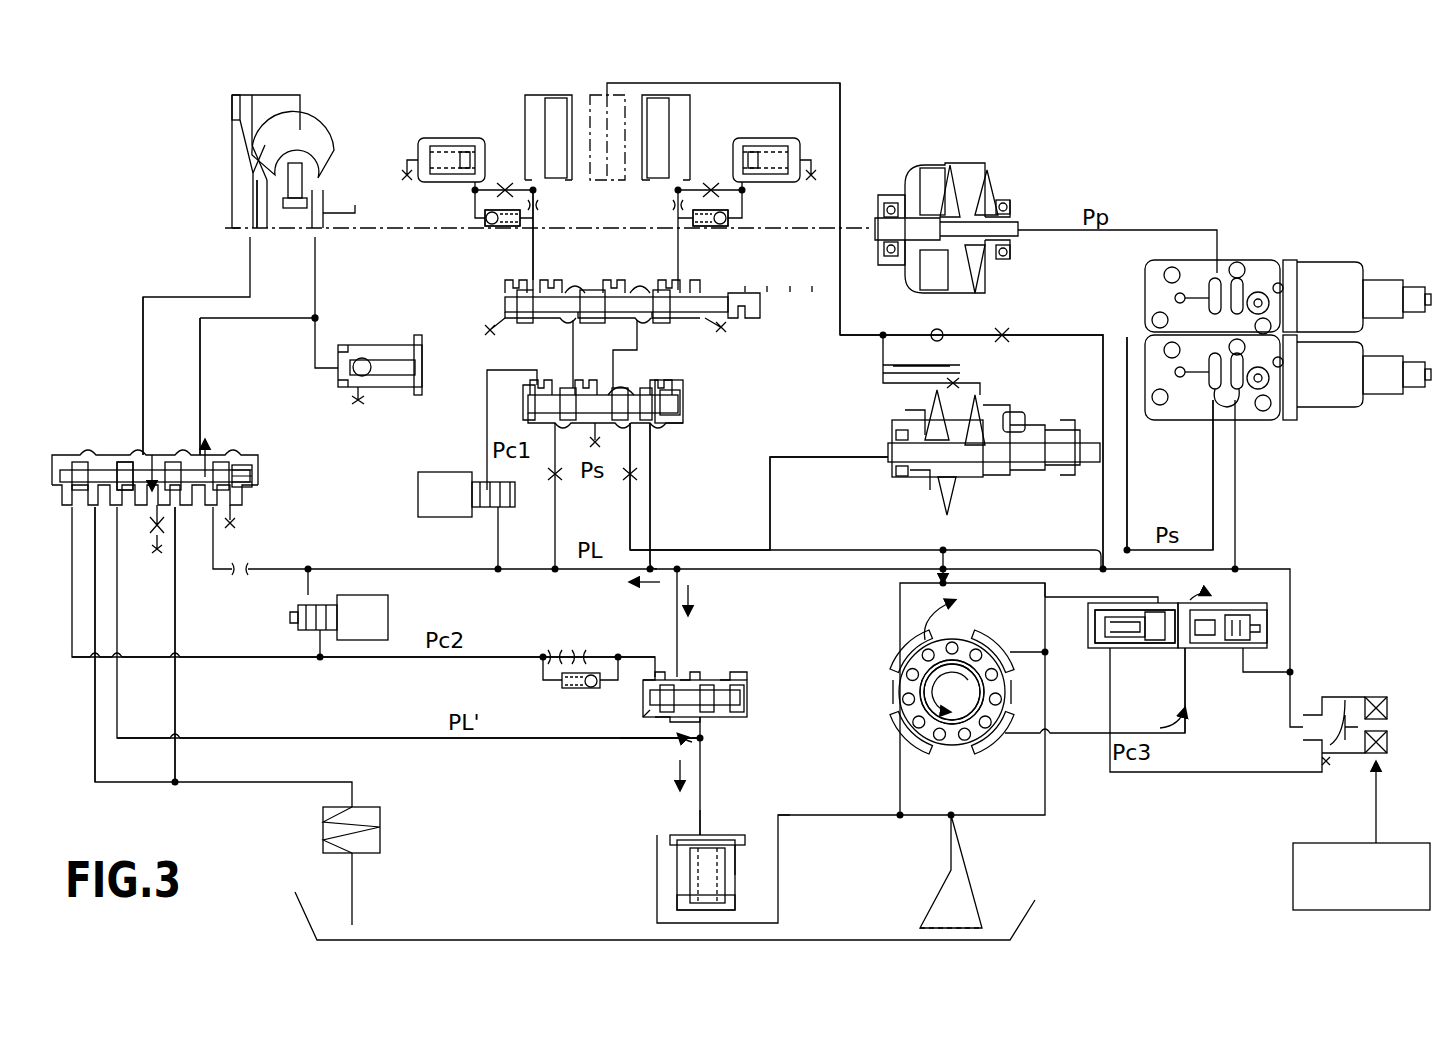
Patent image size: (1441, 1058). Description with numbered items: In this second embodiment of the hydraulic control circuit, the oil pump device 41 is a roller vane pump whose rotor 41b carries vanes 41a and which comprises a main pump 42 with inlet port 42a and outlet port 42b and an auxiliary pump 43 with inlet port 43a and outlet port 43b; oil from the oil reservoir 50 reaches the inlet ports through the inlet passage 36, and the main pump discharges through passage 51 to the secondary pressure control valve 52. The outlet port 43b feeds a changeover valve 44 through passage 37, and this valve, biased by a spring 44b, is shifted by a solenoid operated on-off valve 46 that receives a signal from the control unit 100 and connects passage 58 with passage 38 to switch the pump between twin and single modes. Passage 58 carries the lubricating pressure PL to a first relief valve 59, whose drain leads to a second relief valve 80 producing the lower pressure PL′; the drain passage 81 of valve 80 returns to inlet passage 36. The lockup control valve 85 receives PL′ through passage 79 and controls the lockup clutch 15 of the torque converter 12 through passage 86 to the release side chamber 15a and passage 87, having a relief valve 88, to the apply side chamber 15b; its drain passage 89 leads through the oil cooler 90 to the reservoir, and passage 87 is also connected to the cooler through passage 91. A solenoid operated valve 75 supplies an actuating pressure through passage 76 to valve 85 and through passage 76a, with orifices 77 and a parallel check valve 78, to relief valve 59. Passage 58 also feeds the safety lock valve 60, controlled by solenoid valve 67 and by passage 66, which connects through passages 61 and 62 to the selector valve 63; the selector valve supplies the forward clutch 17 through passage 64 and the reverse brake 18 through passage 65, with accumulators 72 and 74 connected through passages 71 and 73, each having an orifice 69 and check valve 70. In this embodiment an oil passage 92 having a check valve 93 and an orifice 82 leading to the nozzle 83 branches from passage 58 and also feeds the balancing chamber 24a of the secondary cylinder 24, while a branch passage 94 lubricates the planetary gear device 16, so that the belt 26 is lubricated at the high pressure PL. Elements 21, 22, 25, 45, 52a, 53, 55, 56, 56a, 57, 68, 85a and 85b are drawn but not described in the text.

The torque converter 12 is at (330, 125).
The lockup clutch 15 is at (228, 118).
The release side oil chamber 15a is at (232, 176).
The apply side chamber 15b is at (226, 96).
The planetary gear device 16 is at (607, 178).
The forward clutch 17 is at (562, 120).
The reverse brake 18 is at (650, 120).
The pump 21 is at (929, 170).
The bevel gear 22 is at (990, 170).
The secondary cylinder 24 is at (1000, 430).
The balancing chamber 24a is at (1015, 430).
The bevel gear 25 is at (930, 512).
The belt 26 is at (950, 520).
The inlet passage 36 is at (1012, 815).
The passage 37 is at (1185, 733).
The passage 38 is at (1258, 772).
The oil pump device 41 is at (985, 640).
The vanes 41a is at (946, 737).
The rotor 41b is at (955, 742).
The main pump 42 is at (875, 689).
The inlet port 42a is at (900, 728).
The outlet port 42b is at (900, 664).
The auxiliary pump 43 is at (1021, 697).
The inlet port 43a is at (1012, 645).
The outlet port 43b is at (982, 742).
The changeover valve 44 is at (1148, 648).
The spring 44b is at (1103, 652).
The valve 45 is at (1202, 648).
The solenoid operated on-off valve 46 is at (1360, 697).
The oil reservoir 50 is at (1034, 917).
The passage 51 is at (630, 515).
The secondary pressure control valve 52 is at (1249, 415).
The solenoid 52a is at (1355, 407).
The oil passage 53 is at (770, 486).
The oil passage 55 is at (1127, 447).
The control valve 56 is at (1240, 258).
The solenoid 56a is at (1340, 255).
The oil passage 57 is at (1165, 230).
The passage 58 is at (555, 522).
The first relief valve 59 is at (710, 680).
The safety lock valve 60 is at (683, 389).
The passage 61 is at (573, 344).
The passage 62 is at (613, 352).
The selector valve 63 is at (623, 290).
The passage 64 is at (533, 254).
The passage 65 is at (678, 252).
The passage 66 is at (650, 497).
The solenoid operated on-off valve 67 is at (412, 485).
The passage 68 is at (482, 420).
The orifice 69 is at (505, 180).
The check valve 70 is at (496, 228).
The passage 71 is at (475, 206).
The accumulator 72 is at (445, 138).
The passage 73 is at (742, 208).
The accumulator 74 is at (769, 138).
The solenoid operated on-off valve 75 is at (386, 601).
The passage 76 is at (273, 657).
The passage 76a is at (395, 657).
The orifices 77 is at (568, 649).
The check valve 78 is at (580, 688).
The passage 79 is at (632, 738).
The second relief valve 80 is at (723, 874).
The drain passage 81 is at (794, 814).
The orifice 82 is at (1005, 330).
The nozzle 83 is at (940, 365).
The lockup control valve 85 is at (96, 454).
The spool 85a is at (125, 498).
The spring 85b is at (238, 465).
The passage 86 is at (143, 323).
The passage 87 is at (200, 376).
The relief valve 88 is at (363, 340).
The drain passage 89 is at (95, 692).
The oil cooler 90 is at (380, 818).
The passage 91 is at (175, 697).
The oil passage 92 is at (1068, 335).
The check valve 93 is at (931, 330).
The passage 94 is at (840, 293).
The control unit 100 is at (1285, 882).